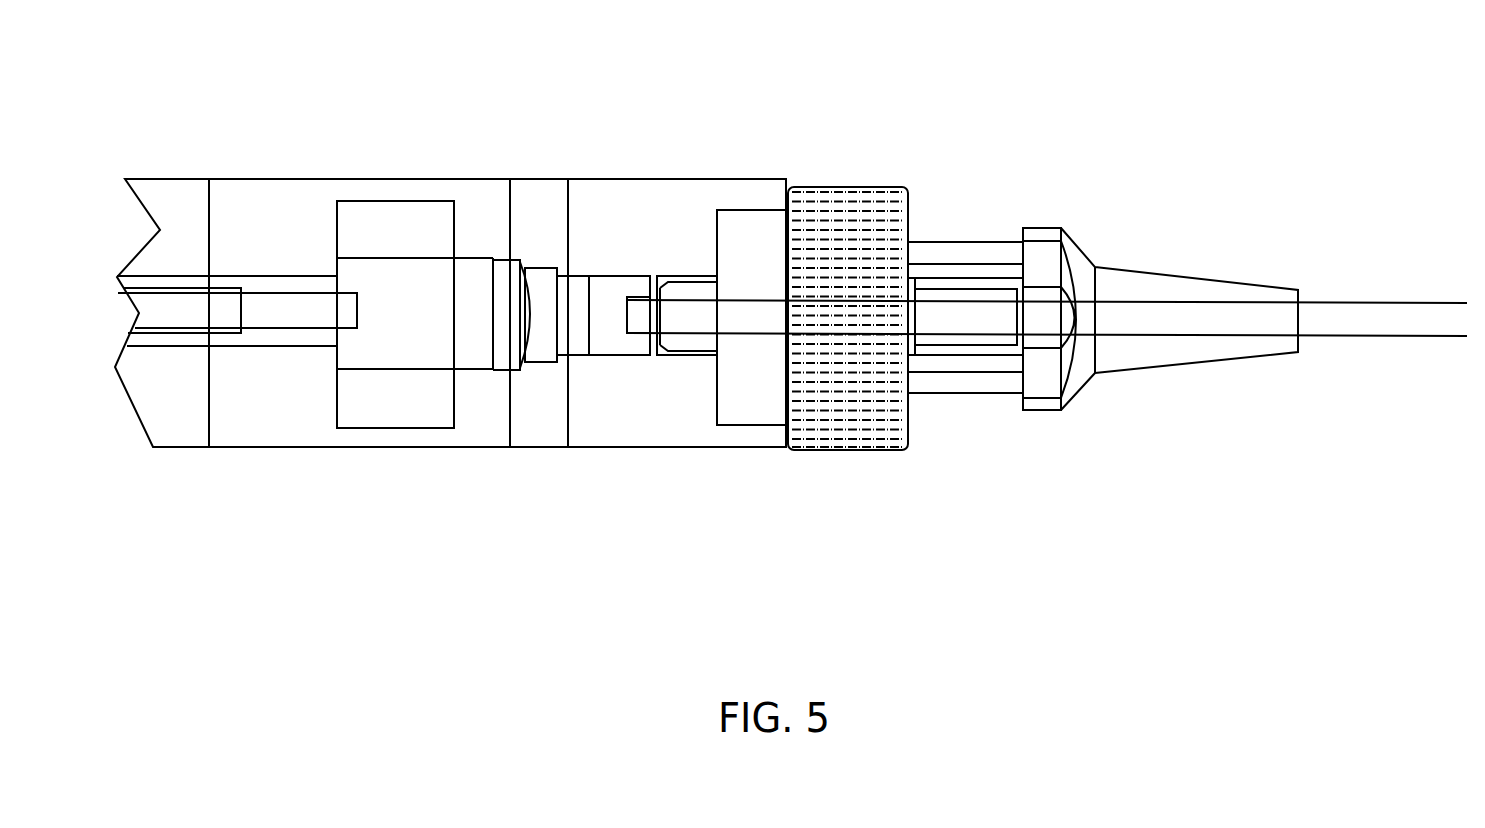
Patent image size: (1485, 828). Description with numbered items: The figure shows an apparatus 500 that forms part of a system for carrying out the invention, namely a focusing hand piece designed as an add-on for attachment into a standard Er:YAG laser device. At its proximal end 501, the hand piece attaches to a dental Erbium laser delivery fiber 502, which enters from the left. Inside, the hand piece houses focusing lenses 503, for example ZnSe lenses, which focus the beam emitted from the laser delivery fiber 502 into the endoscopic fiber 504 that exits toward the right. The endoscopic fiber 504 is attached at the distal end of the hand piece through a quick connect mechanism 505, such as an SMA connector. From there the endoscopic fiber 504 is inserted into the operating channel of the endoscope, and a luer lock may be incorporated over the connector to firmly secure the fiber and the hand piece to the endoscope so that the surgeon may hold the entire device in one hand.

The apparatus 500 is at (357, 517).
The proximal end 501 is at (384, 233).
The dental Erbium laser delivery fiber 502 is at (276, 313).
The focusing lenses 503 is at (548, 313).
The endoscopic fiber 504 is at (1356, 322).
The quick connect mechanism 505 is at (1145, 352).